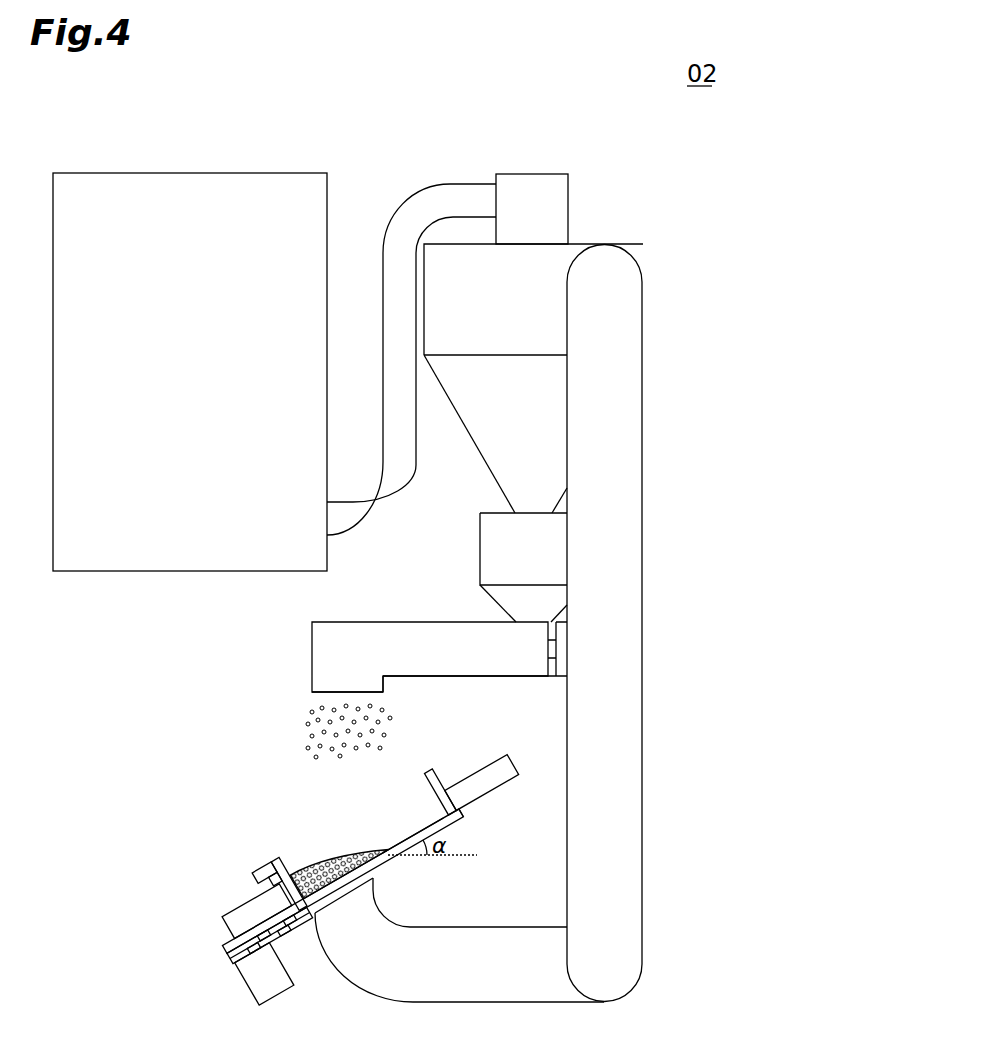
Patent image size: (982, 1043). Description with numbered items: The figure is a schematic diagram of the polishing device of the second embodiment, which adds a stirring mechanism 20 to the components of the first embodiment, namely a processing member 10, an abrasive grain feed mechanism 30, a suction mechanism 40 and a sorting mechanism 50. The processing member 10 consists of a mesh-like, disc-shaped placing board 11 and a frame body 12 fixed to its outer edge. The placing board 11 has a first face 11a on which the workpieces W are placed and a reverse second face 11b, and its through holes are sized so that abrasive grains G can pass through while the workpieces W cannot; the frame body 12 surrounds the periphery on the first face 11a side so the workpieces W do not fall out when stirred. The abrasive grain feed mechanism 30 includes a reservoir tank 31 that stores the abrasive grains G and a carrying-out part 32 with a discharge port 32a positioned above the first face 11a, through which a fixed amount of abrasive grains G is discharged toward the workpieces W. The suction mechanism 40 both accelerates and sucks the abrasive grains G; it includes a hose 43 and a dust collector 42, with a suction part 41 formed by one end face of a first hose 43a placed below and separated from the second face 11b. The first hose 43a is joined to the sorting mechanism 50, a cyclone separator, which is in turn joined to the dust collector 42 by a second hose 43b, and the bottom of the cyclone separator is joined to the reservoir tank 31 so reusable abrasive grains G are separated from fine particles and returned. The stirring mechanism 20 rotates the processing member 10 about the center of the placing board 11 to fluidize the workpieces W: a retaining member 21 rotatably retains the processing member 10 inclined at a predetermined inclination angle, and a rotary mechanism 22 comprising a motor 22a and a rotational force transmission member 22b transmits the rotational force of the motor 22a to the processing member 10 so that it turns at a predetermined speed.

The processing member 10 is at (449, 778).
The placing board 11 is at (427, 810).
The first face 11a is at (403, 832).
The second face 11b is at (440, 829).
The frame body 12 is at (430, 770).
The stirring mechanism 20 is at (226, 914).
The retaining member 21 is at (225, 922).
The rotary mechanism 22 is at (229, 914).
The motor 22a is at (257, 997).
The rotational force transmission member 22b is at (258, 870).
The abrasive grain feed mechanism 30 is at (406, 672).
The reservoir tank 31 is at (480, 560).
The carrying-out part 32 is at (407, 662).
The discharge port 32a is at (333, 692).
The suction mechanism 40 is at (648, 696).
The suction part 41 is at (377, 875).
The dust collector 42 is at (275, 185).
The hose 43 is at (459, 573).
The first hose 43a is at (459, 934).
The second hose 43b is at (448, 197).
The sorting mechanism 50 is at (553, 185).
The abrasive grains G is at (303, 750).
The workpiece W is at (337, 850).